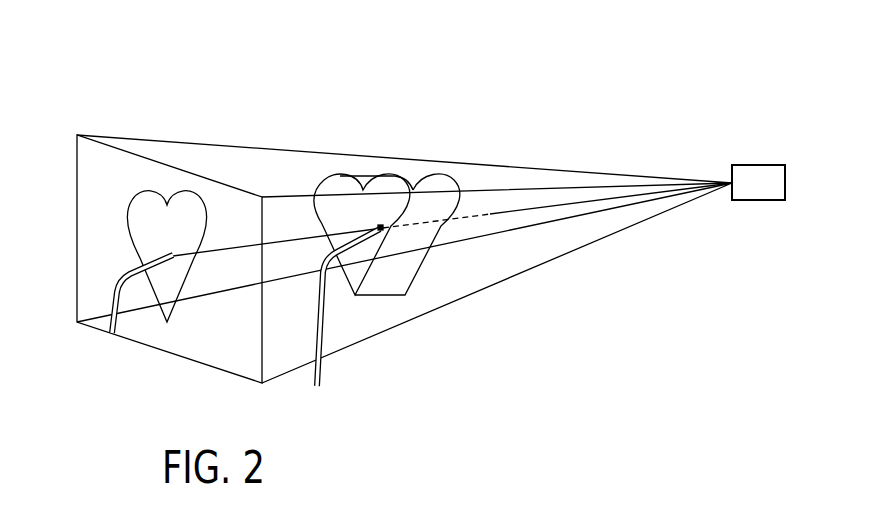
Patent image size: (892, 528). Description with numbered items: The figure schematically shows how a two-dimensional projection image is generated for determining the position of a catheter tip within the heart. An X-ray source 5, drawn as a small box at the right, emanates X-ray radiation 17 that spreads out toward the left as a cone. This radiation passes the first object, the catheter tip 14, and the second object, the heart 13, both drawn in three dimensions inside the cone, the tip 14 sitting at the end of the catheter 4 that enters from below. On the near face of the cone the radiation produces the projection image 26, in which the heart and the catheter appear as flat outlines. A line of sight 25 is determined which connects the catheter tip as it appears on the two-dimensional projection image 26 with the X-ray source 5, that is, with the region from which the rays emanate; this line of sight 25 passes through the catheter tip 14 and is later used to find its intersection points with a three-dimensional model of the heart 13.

The catheter 4 is at (322, 373).
The X-ray source 5 is at (750, 165).
The second object (heart) 13 is at (397, 278).
The first object (catheter tip) 14 is at (382, 225).
The X-ray radiation 17 is at (524, 274).
The line of sight 25 is at (508, 200).
The projection image 26 is at (146, 341).